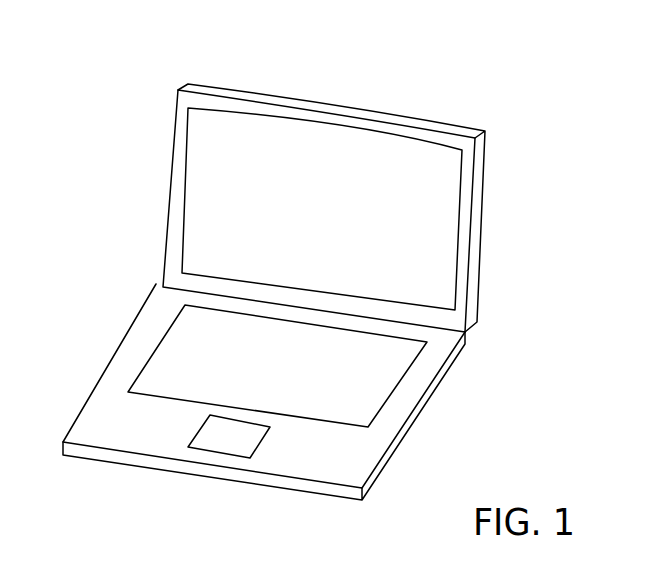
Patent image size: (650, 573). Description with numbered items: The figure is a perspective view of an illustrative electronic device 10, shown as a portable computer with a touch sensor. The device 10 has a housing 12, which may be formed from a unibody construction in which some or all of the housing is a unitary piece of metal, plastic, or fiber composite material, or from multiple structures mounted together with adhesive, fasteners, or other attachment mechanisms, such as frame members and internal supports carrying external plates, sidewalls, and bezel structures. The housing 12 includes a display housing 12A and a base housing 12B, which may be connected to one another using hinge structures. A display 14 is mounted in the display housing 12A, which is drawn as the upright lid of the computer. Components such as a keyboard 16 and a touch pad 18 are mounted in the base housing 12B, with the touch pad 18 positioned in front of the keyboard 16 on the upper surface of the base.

The device 10 is at (308, 274).
The housing 12 is at (290, 306).
The display housing 12A is at (318, 208).
The base housing 12B is at (261, 402).
The display 14 is at (442, 222).
The keyboard 16 is at (383, 385).
The touch pad 18 is at (228, 445).